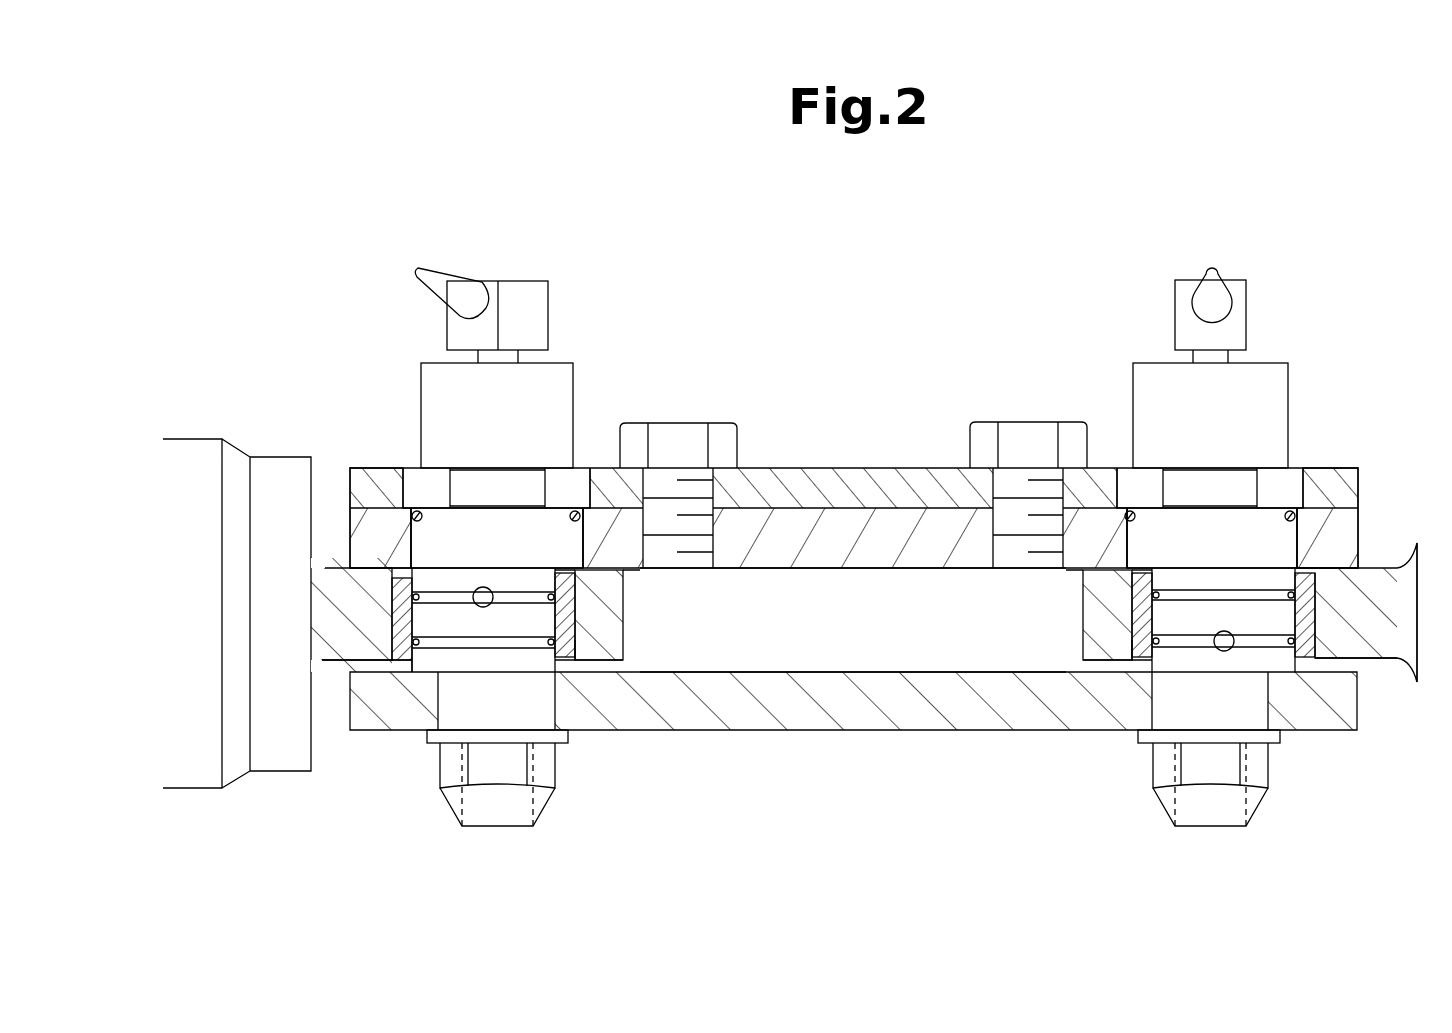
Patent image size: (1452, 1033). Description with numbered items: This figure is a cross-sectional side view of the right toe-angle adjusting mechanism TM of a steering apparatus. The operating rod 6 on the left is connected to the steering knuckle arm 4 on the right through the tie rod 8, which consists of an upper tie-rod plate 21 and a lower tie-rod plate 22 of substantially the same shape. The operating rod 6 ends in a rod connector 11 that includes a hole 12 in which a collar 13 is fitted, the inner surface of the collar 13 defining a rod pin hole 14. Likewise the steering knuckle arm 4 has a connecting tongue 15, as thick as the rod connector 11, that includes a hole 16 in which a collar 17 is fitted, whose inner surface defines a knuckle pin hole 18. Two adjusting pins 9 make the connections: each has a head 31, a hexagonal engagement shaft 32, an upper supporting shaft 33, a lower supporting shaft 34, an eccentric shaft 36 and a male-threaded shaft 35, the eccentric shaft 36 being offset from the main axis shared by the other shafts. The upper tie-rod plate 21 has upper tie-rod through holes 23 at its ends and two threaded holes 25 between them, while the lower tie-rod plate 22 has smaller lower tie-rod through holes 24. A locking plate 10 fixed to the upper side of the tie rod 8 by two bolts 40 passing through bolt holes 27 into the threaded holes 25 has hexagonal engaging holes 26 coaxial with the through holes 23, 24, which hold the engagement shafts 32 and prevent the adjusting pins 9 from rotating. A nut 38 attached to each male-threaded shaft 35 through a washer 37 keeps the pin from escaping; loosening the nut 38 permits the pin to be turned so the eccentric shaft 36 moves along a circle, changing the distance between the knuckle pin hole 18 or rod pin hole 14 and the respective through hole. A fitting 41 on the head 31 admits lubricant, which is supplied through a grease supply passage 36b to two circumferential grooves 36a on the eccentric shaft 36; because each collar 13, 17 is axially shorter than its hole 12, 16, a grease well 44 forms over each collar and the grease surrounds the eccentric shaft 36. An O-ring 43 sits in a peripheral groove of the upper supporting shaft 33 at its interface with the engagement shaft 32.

The toe-angle adjusting mechanism TM is at (790, 347).
The steering knuckle arm 4 is at (1392, 563).
The operating rod 6 is at (192, 438).
The tie rod 8 is at (853, 620).
The adjusting pin 9 is at (852, 346).
The locking plate 10 is at (847, 466).
The rod connector 11 is at (328, 668).
The hole 12 is at (578, 650).
The collar 13 is at (400, 668).
The rod pin hole 14 is at (578, 618).
The connecting tongue 15 is at (1380, 665).
The hole 16 is at (1130, 650).
The collar 17 is at (1305, 690).
The knuckle pin hole 18 is at (1130, 618).
The upper tie-rod plate 21 is at (796, 571).
The lower tie-rod plate 22 is at (853, 645).
The upper tie-rod through hole 23 is at (430, 542).
The lower tie-rod through hole 24 is at (574, 738).
The threaded hole 25 is at (712, 570).
The engaging hole 26 is at (405, 488).
The bolt hole 27 is at (647, 482).
The head 31 is at (421, 388).
The engagement shaft 32 is at (530, 480).
The upper supporting shaft 33 is at (473, 522).
The lower supporting shaft 34 is at (456, 784).
The male-threaded shaft 35 is at (452, 818).
The eccentric shaft 36 is at (330, 612).
The circumferential groove 36a is at (437, 702).
The grease supply passage 36b is at (486, 588).
The washer 37 is at (557, 766).
The nut 38 is at (540, 815).
The bolt 40 is at (680, 420).
The fitting 41 is at (519, 279).
The O-ring 43 is at (588, 514).
The grease well 44 is at (578, 578).